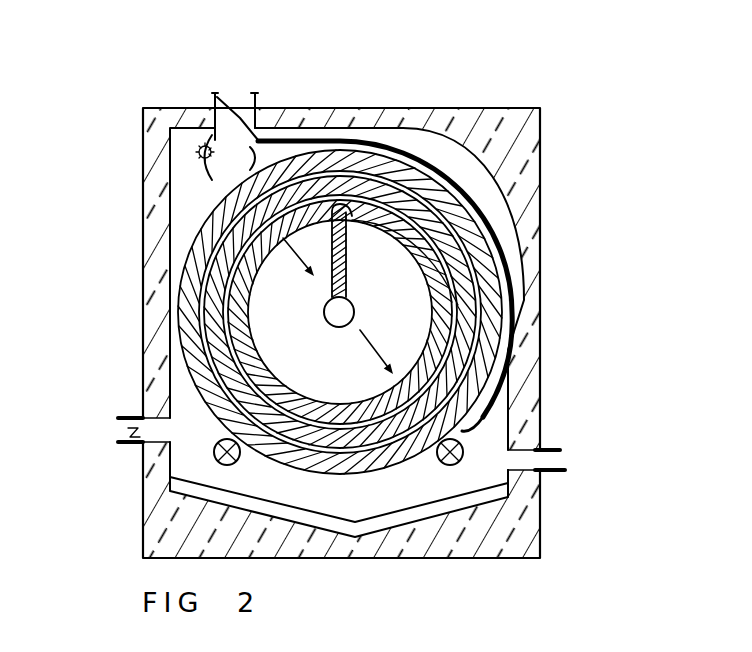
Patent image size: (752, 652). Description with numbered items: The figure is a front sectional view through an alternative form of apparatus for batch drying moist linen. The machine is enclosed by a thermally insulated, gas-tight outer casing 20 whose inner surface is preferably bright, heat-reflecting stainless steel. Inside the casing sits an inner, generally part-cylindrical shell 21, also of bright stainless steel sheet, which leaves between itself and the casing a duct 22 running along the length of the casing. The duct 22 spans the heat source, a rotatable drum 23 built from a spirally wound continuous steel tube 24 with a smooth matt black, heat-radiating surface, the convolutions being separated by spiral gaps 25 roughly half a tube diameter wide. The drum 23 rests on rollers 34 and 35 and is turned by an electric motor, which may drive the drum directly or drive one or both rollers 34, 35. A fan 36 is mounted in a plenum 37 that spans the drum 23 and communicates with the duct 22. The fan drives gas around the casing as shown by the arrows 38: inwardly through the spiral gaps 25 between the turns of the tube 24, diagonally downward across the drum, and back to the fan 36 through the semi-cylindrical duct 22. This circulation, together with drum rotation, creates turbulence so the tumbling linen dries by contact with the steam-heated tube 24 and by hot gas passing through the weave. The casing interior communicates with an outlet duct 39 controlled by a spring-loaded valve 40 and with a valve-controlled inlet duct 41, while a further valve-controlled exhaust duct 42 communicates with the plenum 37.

The outer casing 20 is at (508, 126).
The inner shell 21 is at (340, 136).
The duct 22 is at (417, 143).
The rotatable drum 23 is at (172, 262).
The steel tube 24 is at (200, 352).
The spiral gaps 25 is at (187, 313).
The roller 34 is at (218, 460).
The roller 35 is at (452, 465).
The fan 36 is at (200, 150).
The plenum 37 is at (205, 191).
The arrows 38 is at (297, 250).
The outlet duct 39 is at (125, 418).
The spring-loaded valve 40 is at (128, 432).
The inlet duct 41 is at (530, 462).
The exhaust duct 42 is at (235, 103).